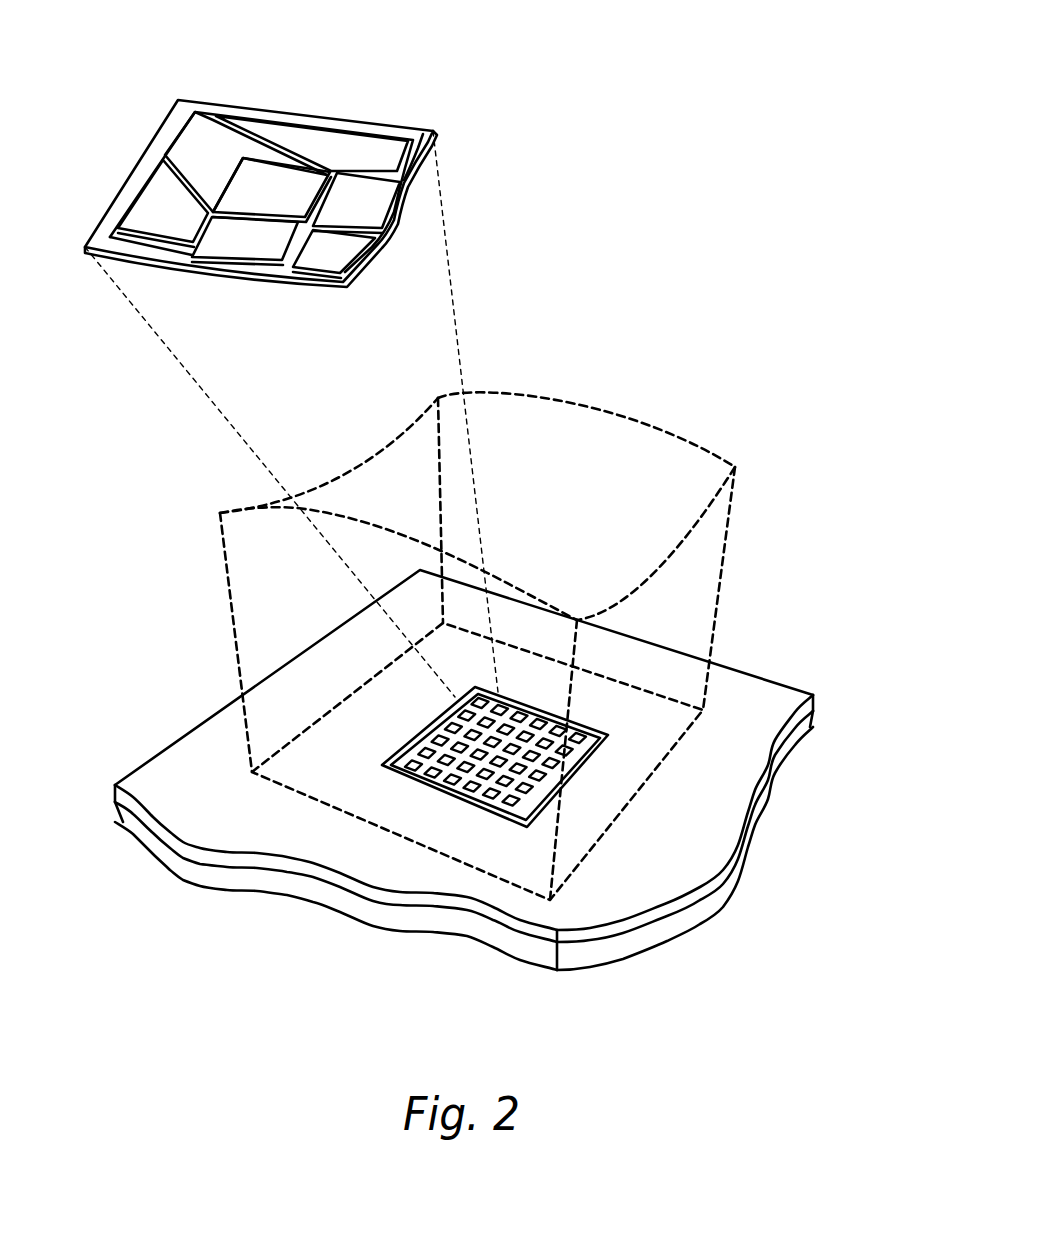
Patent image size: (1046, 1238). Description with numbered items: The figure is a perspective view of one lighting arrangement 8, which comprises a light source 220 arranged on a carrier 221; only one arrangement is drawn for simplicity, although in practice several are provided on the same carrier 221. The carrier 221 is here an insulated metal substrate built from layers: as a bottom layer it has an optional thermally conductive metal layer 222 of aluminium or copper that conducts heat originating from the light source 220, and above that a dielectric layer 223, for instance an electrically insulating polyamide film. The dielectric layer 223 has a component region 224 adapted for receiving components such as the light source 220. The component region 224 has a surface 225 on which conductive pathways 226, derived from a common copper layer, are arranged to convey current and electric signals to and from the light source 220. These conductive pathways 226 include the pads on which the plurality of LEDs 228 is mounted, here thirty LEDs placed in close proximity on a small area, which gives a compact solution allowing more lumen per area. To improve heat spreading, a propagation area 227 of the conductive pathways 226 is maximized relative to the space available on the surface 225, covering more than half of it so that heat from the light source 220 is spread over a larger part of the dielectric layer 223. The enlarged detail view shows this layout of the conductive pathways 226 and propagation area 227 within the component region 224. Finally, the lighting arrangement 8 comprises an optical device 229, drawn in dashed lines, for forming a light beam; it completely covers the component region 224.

The lighting arrangement 8 is at (703, 360).
The light source 220 is at (403, 760).
The carrier 221 is at (464, 806).
The thermally conductive metal layer 222 is at (578, 957).
The dielectric layer 223 is at (500, 905).
The component region 224 is at (207, 98).
The surface 225 is at (305, 120).
The conductive pathways 226 is at (188, 162).
The propagation area 227 is at (370, 153).
The LEDs 228 is at (377, 210).
The optical device 229 is at (523, 413).